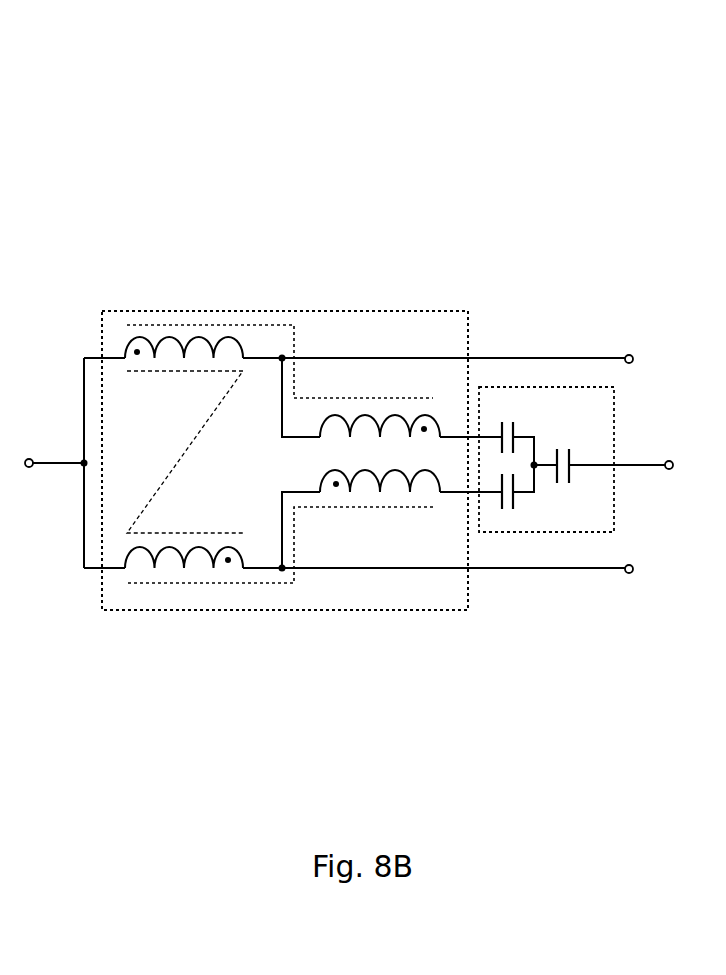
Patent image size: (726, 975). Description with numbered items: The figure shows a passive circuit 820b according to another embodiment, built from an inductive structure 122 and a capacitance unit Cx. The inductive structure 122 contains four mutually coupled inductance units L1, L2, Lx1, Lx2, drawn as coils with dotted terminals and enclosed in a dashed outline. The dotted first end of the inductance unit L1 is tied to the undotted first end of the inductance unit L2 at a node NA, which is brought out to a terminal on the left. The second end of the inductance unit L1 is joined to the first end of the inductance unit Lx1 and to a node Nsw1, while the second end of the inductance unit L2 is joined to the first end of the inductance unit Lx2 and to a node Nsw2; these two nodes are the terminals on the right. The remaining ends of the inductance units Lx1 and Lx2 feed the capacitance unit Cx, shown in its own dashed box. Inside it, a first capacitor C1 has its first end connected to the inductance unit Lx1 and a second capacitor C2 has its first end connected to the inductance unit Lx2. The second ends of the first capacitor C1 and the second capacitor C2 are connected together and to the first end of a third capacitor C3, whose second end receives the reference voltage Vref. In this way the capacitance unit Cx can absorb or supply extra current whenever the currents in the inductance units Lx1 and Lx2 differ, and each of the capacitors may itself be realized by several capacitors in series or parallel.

The passive circuit 820b is at (82, 78).
The inductive structure 122 is at (190, 311).
The inductance unit L1 is at (243, 352).
The inductance unit L2 is at (250, 570).
The inductance unit Lx1 is at (373, 418).
The inductance unit Lx2 is at (452, 493).
The first capacitor C1 is at (527, 428).
The second capacitor C2 is at (524, 503).
The third capacitor C3 is at (581, 457).
The capacitance unit Cx is at (614, 503).
The node NA is at (30, 459).
The node Nsw1 is at (627, 356).
The node Nsw2 is at (628, 573).
The reference voltage Vref is at (692, 468).